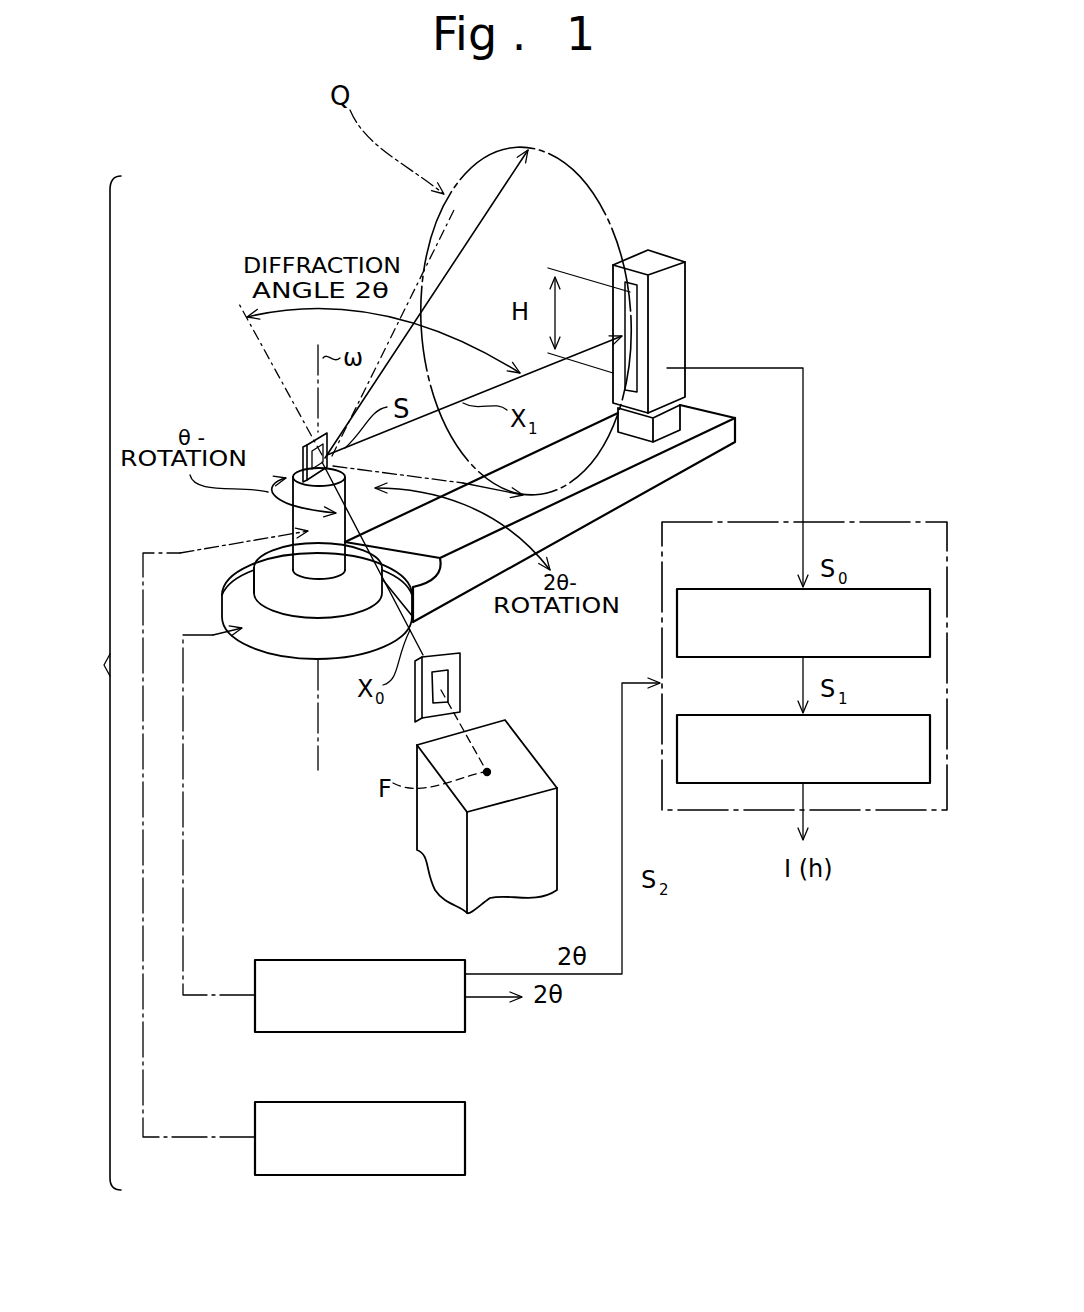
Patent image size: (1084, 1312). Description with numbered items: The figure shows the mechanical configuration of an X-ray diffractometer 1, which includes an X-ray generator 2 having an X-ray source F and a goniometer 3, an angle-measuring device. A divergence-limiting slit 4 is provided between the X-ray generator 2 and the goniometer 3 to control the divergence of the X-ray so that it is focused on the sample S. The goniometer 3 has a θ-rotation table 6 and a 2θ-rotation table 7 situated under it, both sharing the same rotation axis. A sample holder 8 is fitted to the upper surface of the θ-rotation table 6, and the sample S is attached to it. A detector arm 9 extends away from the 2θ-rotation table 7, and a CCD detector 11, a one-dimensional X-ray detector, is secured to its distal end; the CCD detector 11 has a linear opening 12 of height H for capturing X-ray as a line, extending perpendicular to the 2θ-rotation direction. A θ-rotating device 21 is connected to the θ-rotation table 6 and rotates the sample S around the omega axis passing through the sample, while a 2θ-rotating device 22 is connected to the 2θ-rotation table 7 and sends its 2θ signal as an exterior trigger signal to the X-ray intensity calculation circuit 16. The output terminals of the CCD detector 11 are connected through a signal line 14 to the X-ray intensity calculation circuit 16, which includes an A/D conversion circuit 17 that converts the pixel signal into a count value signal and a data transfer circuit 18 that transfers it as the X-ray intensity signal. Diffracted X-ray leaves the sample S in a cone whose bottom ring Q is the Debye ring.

The X-ray diffractometer 1 is at (96, 683).
The X-ray generator 2 is at (548, 763).
The goniometer 3 is at (204, 382).
The divergence-limiting slit 4 is at (455, 681).
The θ-rotation table 6 is at (306, 523).
The 2θ-rotation table 7 is at (300, 625).
The sample holder 8 is at (310, 457).
The detector arm 9 is at (578, 512).
The CCD detector 11 is at (712, 287).
The linear opening 12 is at (628, 312).
The signal line 14 is at (810, 412).
The X-ray intensity calculation circuit 16 is at (878, 522).
The A/D conversion circuit 17 is at (740, 589).
The data transfer circuit 18 is at (740, 715).
The θ-rotating device 21 is at (378, 1102).
The 2θ-rotating device 22 is at (348, 960).